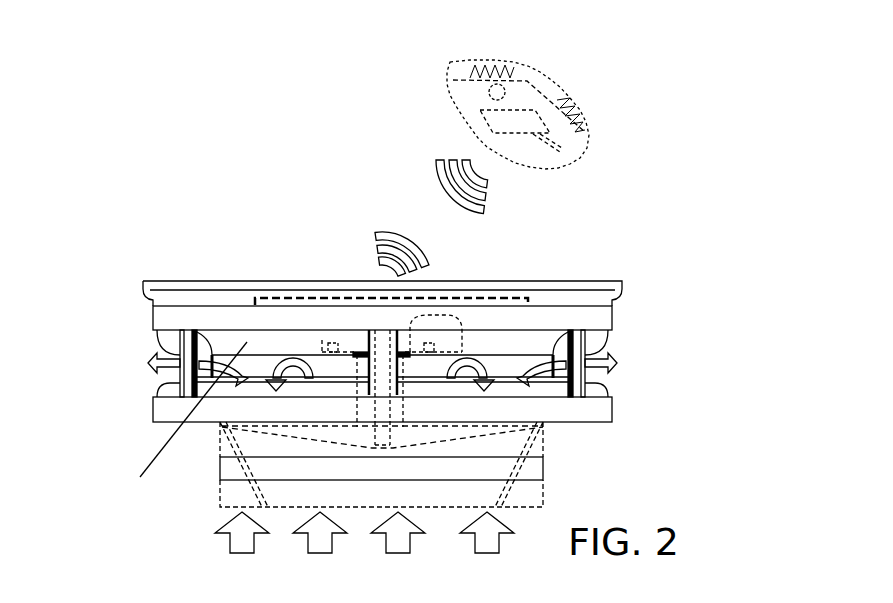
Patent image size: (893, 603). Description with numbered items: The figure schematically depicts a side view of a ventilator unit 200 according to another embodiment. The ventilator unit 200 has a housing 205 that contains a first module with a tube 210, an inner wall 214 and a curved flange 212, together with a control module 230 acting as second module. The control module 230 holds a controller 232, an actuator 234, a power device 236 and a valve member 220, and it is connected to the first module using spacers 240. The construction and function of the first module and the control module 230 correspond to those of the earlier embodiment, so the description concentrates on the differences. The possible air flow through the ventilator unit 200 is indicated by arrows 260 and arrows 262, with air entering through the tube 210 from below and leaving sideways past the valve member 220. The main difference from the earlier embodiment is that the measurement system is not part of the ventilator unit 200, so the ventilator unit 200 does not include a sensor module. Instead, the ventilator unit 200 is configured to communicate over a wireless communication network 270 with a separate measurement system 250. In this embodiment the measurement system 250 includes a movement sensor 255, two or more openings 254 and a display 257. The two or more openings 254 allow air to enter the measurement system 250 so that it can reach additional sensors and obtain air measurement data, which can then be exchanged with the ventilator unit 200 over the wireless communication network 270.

The ventilator unit 200 is at (250, 125).
The housing 205 is at (347, 327).
The tube 210 is at (452, 464).
The curved flange 212 is at (443, 392).
The inner wall 214 is at (434, 490).
The valve member 220 is at (446, 414).
The control module 230 is at (445, 314).
The controller 232 is at (411, 277).
The actuator 234 is at (306, 312).
The power device 236 is at (502, 301).
The spacers 240 is at (438, 362).
The measurement system 250 is at (470, 114).
The openings 254 is at (509, 84).
The movement sensor 255 is at (527, 53).
The display 257 is at (556, 138).
The arrows 260 is at (325, 489).
The arrows 262 is at (445, 372).
The wireless communication network 270 is at (413, 218).